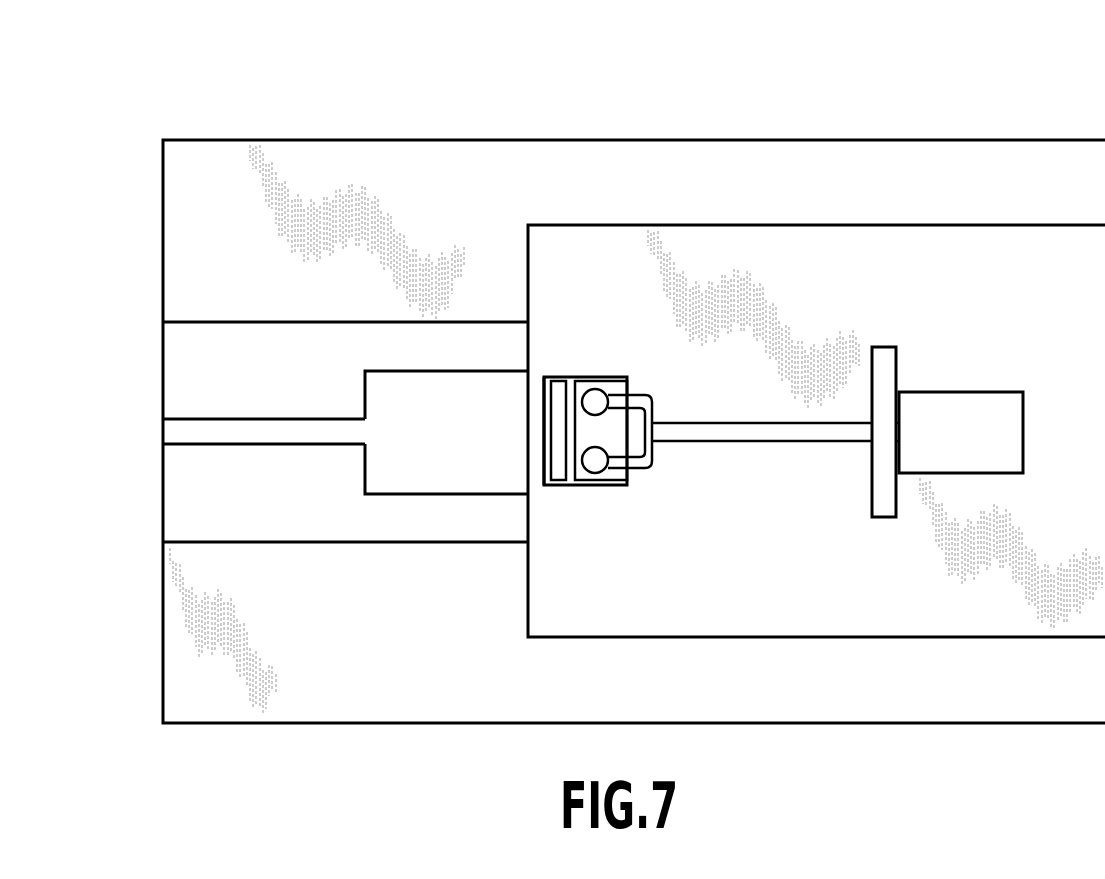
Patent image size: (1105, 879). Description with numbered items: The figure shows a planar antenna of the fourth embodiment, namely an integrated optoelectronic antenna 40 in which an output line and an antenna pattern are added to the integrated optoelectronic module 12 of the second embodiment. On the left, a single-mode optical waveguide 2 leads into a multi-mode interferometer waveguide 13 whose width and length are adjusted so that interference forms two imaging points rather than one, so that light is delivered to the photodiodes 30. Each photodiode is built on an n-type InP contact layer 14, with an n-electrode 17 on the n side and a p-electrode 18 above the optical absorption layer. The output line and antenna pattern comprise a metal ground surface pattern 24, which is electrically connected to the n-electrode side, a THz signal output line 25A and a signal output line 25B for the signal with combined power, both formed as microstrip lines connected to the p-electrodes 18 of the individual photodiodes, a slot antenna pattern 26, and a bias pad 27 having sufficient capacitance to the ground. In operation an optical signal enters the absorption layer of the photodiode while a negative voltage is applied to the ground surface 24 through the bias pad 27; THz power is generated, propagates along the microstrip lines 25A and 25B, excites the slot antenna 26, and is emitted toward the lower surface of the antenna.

The integrated optoelectronic antenna 40 is at (884, 100).
The integrated optoelectronic module 12 is at (378, 558).
The single-mode optical waveguide 2 is at (255, 445).
The multi-mode interferometer waveguide 13 is at (528, 498).
The metal ground surface pattern 24 is at (655, 225).
The photodiode 30 is at (638, 496).
The n-type InP contact layer 14 is at (552, 377).
The n-electrode 17 is at (556, 476).
The p-electrode 18 is at (592, 473).
The THz signal output line 25A is at (643, 387).
The signal output line 25B is at (712, 422).
The slot antenna pattern 26 is at (887, 347).
The bias pad 27 is at (995, 392).